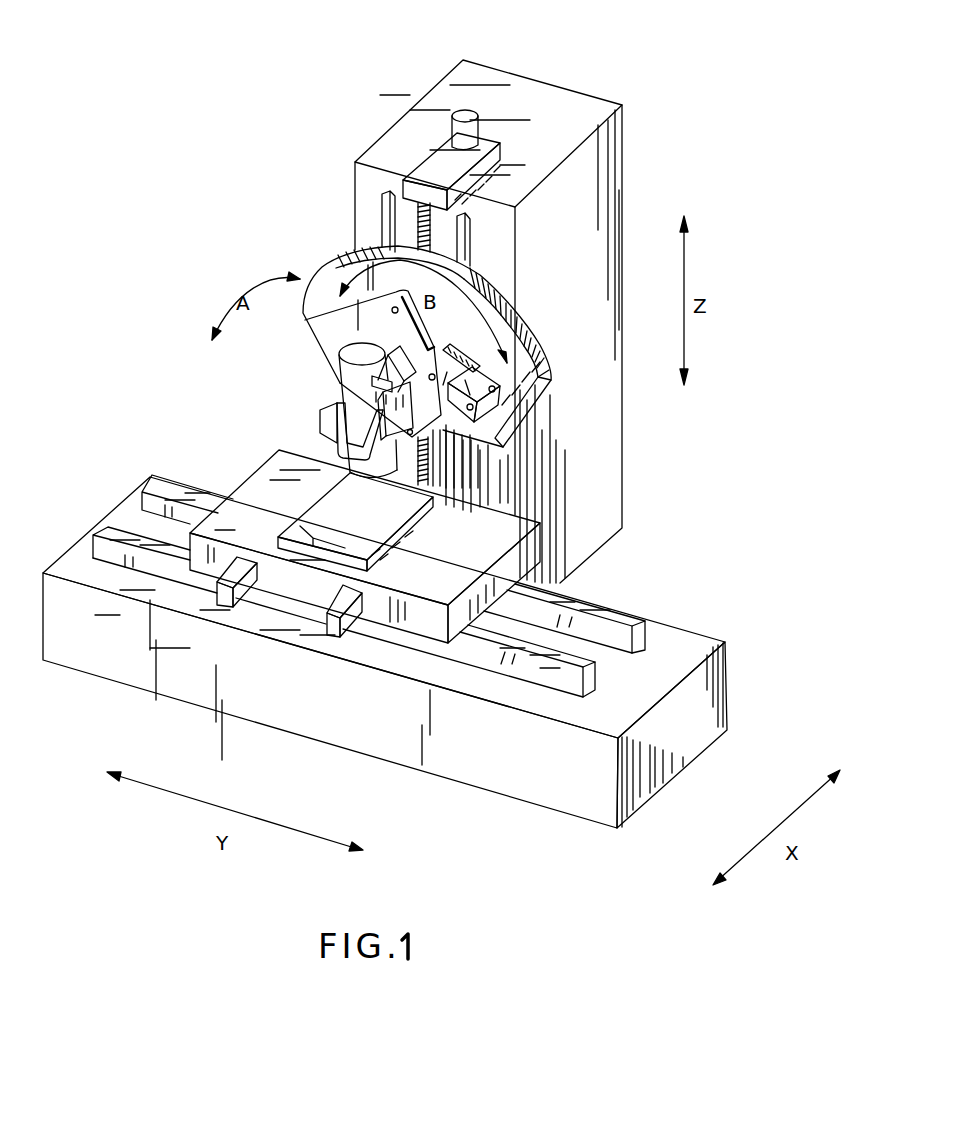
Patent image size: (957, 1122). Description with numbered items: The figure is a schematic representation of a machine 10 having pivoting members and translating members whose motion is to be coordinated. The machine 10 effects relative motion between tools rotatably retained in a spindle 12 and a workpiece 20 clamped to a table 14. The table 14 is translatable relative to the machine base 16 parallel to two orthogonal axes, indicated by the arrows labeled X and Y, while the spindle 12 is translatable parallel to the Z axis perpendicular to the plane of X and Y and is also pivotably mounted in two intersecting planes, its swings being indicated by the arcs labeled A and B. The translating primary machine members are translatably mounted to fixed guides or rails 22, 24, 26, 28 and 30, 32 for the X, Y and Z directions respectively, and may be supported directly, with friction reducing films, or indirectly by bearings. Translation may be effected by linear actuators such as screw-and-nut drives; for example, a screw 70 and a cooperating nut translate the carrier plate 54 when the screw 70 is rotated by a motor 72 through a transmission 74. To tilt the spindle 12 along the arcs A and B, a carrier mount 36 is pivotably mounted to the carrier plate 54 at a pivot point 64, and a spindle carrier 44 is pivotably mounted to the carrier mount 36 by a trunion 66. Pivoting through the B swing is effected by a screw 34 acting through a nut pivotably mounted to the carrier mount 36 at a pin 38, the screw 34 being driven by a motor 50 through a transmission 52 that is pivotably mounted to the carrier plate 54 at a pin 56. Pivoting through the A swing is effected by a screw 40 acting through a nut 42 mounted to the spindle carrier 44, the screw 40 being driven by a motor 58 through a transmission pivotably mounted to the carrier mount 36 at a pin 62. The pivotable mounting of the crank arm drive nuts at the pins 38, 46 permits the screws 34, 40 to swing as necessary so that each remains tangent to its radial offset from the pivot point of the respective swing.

The machine 10 is at (522, 74).
The spindle 12 is at (352, 350).
The table 14 is at (274, 514).
The machine base 16 is at (236, 689).
The workpiece 20 is at (378, 532).
The guide rail 22 is at (598, 680).
The guide rail 24 is at (648, 630).
The guide rail 26 is at (330, 608).
The guide rail 28 is at (215, 574).
The guide rail 30 is at (468, 240).
The guide rail 32 is at (384, 205).
The screw 34 is at (440, 300).
The carrier mount 36 is at (382, 325).
The pin 38 is at (392, 308).
The screw 40 is at (398, 414).
The nut 42 is at (378, 392).
The spindle carrier 44 is at (343, 462).
The pin 46 is at (438, 458).
The motor 50 is at (456, 425).
The transmission 52 is at (490, 405).
The carrier plate 54 is at (500, 297).
The pin 56 is at (470, 432).
The motor 58 is at (435, 375).
The pin 62 is at (445, 343).
The pivot point 64 is at (372, 380).
The trunion 66 is at (415, 445).
The screw 70 is at (420, 236).
The motor 72 is at (466, 117).
The transmission 74 is at (485, 140).